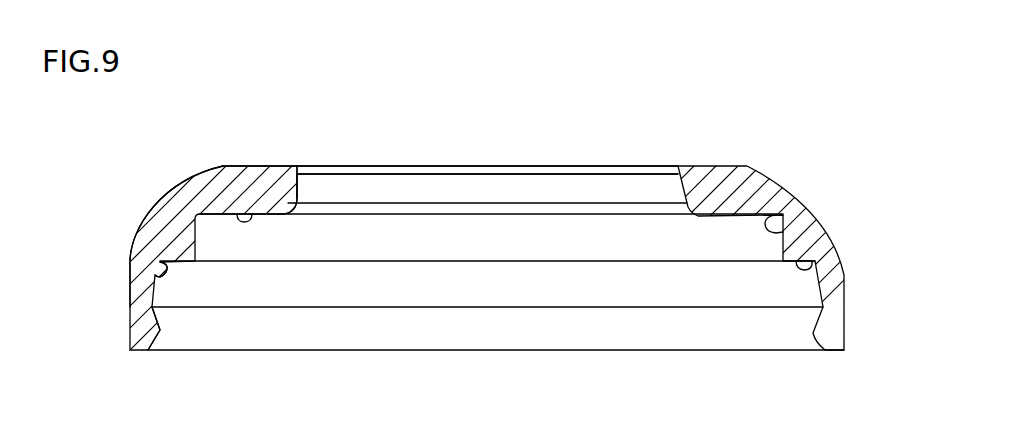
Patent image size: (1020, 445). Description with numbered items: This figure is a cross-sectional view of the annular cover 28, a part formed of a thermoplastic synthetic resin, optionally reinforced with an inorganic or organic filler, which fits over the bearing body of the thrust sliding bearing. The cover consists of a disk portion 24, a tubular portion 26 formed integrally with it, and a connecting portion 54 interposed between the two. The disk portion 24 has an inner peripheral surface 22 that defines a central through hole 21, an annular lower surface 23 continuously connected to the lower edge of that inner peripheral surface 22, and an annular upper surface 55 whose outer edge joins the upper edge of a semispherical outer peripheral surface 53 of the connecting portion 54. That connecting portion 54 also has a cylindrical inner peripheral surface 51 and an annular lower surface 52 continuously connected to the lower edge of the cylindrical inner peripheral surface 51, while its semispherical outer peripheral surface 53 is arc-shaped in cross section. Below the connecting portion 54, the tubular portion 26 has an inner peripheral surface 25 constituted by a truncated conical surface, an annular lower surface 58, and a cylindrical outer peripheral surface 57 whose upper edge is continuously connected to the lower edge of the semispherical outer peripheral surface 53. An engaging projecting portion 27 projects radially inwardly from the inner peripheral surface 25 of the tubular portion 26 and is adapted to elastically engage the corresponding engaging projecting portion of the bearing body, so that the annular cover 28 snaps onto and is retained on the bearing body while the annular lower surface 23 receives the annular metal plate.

The through hole 21 is at (484, 190).
The inner peripheral surface 22 is at (297, 187).
The annular lower surface 23 is at (240, 213).
The disk portion 24 is at (272, 180).
The inner peripheral surface 25 is at (132, 263).
The tubular portion 26 is at (138, 310).
The engaging projecting portion 27 is at (147, 337).
The annular cover 28 is at (617, 156).
The cylindrical inner peripheral surface 51 is at (775, 215).
The annular lower surface 52 is at (820, 260).
The semispherical outer peripheral surface 53 is at (187, 177).
The connecting portion 54 is at (163, 222).
The annular upper surface 55 is at (548, 166).
The cylindrical outer peripheral surface 57 is at (130, 283).
The annular lower surface 58 is at (476, 352).